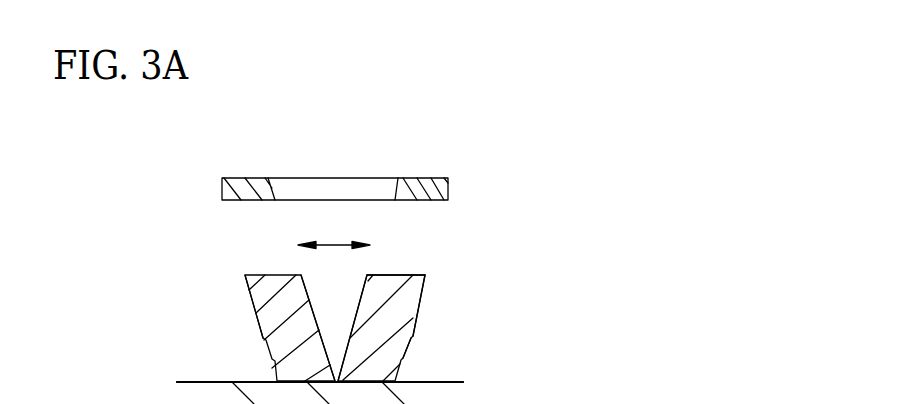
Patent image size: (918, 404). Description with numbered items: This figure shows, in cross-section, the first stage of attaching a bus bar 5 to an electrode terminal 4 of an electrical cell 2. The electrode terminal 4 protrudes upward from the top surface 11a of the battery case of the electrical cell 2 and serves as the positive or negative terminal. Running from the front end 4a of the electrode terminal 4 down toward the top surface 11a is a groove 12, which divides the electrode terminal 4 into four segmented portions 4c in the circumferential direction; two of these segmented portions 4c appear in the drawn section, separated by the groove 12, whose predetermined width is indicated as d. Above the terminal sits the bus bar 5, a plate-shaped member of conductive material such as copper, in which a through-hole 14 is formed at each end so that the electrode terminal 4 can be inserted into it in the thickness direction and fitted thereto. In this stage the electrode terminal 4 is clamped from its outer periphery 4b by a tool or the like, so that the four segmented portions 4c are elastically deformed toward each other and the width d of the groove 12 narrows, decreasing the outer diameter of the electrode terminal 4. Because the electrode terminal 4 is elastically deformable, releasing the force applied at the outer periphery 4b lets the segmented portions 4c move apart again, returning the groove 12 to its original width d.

The electrical cell 2 is at (218, 392).
The top surface of the battery case 11a is at (438, 382).
The electrode terminal 4 is at (430, 282).
The front end of the electrode terminal 4a is at (400, 274).
The outer periphery of the electrode terminal 4b is at (407, 331).
The segmented portion 4c is at (250, 297).
The groove 12 is at (308, 284).
The bus bar 5 is at (424, 178).
The through-hole 14 is at (393, 191).
The width of the groove d is at (343, 244).